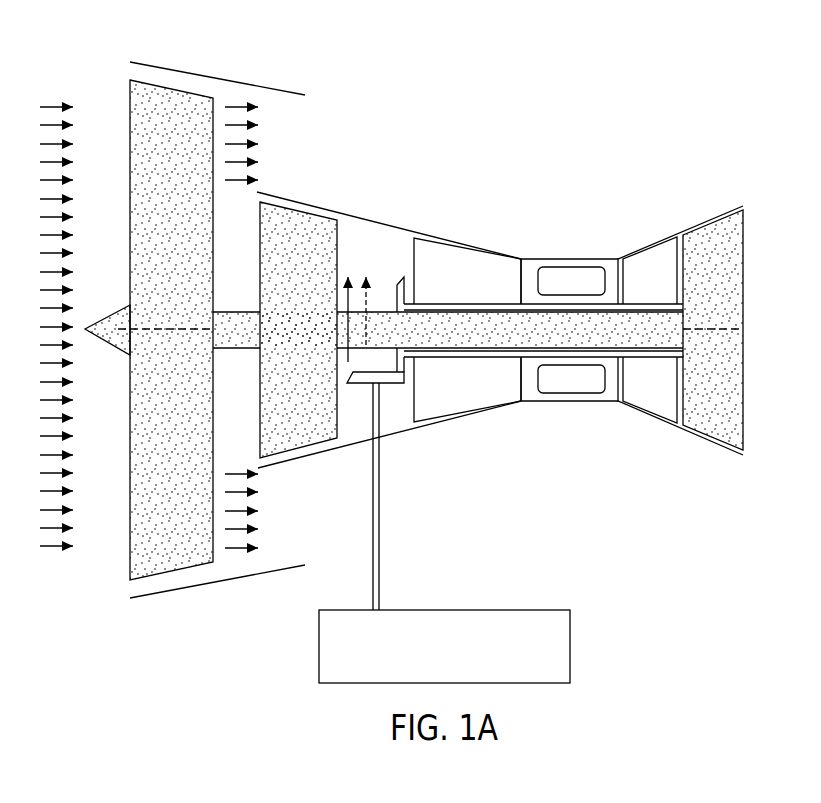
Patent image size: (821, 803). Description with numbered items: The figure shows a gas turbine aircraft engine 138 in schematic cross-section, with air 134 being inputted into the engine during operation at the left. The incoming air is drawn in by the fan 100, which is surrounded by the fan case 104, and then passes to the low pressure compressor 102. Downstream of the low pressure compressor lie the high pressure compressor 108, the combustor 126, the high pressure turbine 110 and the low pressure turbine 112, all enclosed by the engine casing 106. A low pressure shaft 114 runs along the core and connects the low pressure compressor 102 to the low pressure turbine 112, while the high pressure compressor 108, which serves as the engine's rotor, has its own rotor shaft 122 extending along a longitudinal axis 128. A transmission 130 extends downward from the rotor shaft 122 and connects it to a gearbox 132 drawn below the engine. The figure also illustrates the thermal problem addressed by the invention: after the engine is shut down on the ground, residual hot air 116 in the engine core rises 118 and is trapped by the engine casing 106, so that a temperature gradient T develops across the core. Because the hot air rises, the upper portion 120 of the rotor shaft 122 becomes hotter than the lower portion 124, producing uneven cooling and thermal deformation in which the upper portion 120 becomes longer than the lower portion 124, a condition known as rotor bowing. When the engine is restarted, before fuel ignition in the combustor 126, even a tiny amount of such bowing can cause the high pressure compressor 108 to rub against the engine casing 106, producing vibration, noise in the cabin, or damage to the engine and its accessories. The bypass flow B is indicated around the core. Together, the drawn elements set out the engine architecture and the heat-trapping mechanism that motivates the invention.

The fan 100 is at (147, 267).
The low pressure compressor 102 is at (300, 210).
The fan case 104 is at (210, 76).
The engine casing 106 is at (320, 457).
The high pressure compressor 108 is at (457, 245).
The high pressure turbine 110 is at (658, 262).
The low pressure turbine 112 is at (727, 424).
The low pressure shaft 114 is at (580, 322).
The residual hot air 116 is at (372, 238).
The rising of hot air 118 is at (364, 347).
The upper portion of rotor shaft 120 is at (465, 300).
The rotor shaft 122 is at (673, 304).
The lower portion of rotor shaft 124 is at (463, 358).
The combustor 126 is at (582, 403).
The longitudinal axis 128 is at (705, 330).
The transmission 130 is at (381, 488).
The gearbox 132 is at (570, 647).
The air 134 is at (48, 107).
The engine 138 is at (640, 97).
The bypass flow B is at (660, 298).
The temperature gradient T is at (343, 303).